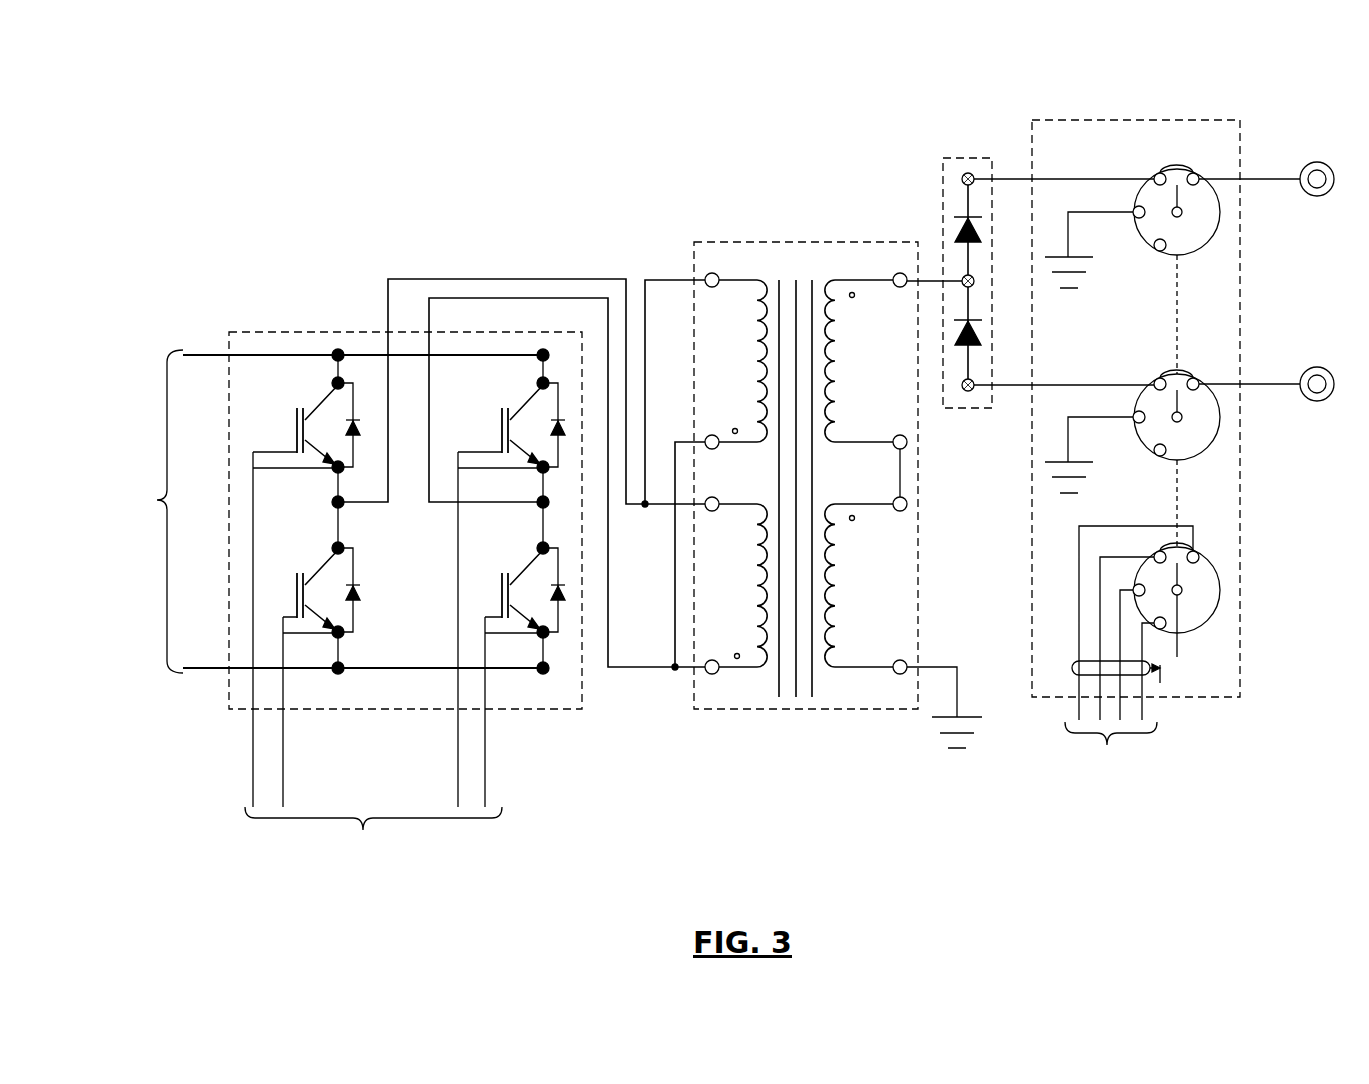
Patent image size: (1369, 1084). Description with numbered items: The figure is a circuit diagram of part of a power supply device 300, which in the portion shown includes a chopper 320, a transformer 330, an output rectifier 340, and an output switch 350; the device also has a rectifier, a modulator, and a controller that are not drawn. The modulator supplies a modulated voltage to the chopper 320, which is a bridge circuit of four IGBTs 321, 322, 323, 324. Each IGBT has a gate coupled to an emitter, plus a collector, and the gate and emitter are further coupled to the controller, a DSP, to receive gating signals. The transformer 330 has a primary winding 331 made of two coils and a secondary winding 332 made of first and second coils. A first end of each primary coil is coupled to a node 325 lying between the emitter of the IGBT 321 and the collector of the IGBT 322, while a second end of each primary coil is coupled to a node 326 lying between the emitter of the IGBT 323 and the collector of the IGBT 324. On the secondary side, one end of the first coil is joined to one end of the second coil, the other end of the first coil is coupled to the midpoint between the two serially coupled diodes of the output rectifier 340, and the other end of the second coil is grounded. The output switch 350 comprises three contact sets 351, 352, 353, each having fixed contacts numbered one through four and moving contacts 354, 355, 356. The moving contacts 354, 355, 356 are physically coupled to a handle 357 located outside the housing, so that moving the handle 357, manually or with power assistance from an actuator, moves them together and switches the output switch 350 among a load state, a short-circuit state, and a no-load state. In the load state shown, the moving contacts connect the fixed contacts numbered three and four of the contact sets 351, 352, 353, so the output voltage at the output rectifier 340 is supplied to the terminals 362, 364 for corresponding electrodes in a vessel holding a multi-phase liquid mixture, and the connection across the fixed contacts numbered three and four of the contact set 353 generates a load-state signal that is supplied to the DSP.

The power supply device 300 is at (212, 93).
The chopper 320 is at (348, 332).
The IGBT 321 is at (500, 387).
The IGBT 322 is at (505, 648).
The IGBT 323 is at (290, 385).
The IGBT 324 is at (300, 647).
The node 325 is at (538, 505).
The node 326 is at (331, 502).
The transformer 330 is at (773, 242).
The primary winding 331 is at (735, 702).
The secondary winding 332 is at (838, 680).
The output rectifier 340 is at (945, 158).
The output switch 350 is at (1045, 120).
The contact set 351 is at (1195, 250).
The contact set 352 is at (1195, 455).
The contact set 353 is at (1195, 630).
The moving contact 354 is at (1183, 198).
The moving contact 355 is at (1183, 403).
The moving contact 356 is at (1183, 576).
The handle 357 is at (1181, 660).
The terminal 362 is at (1312, 163).
The terminal 364 is at (1330, 400).